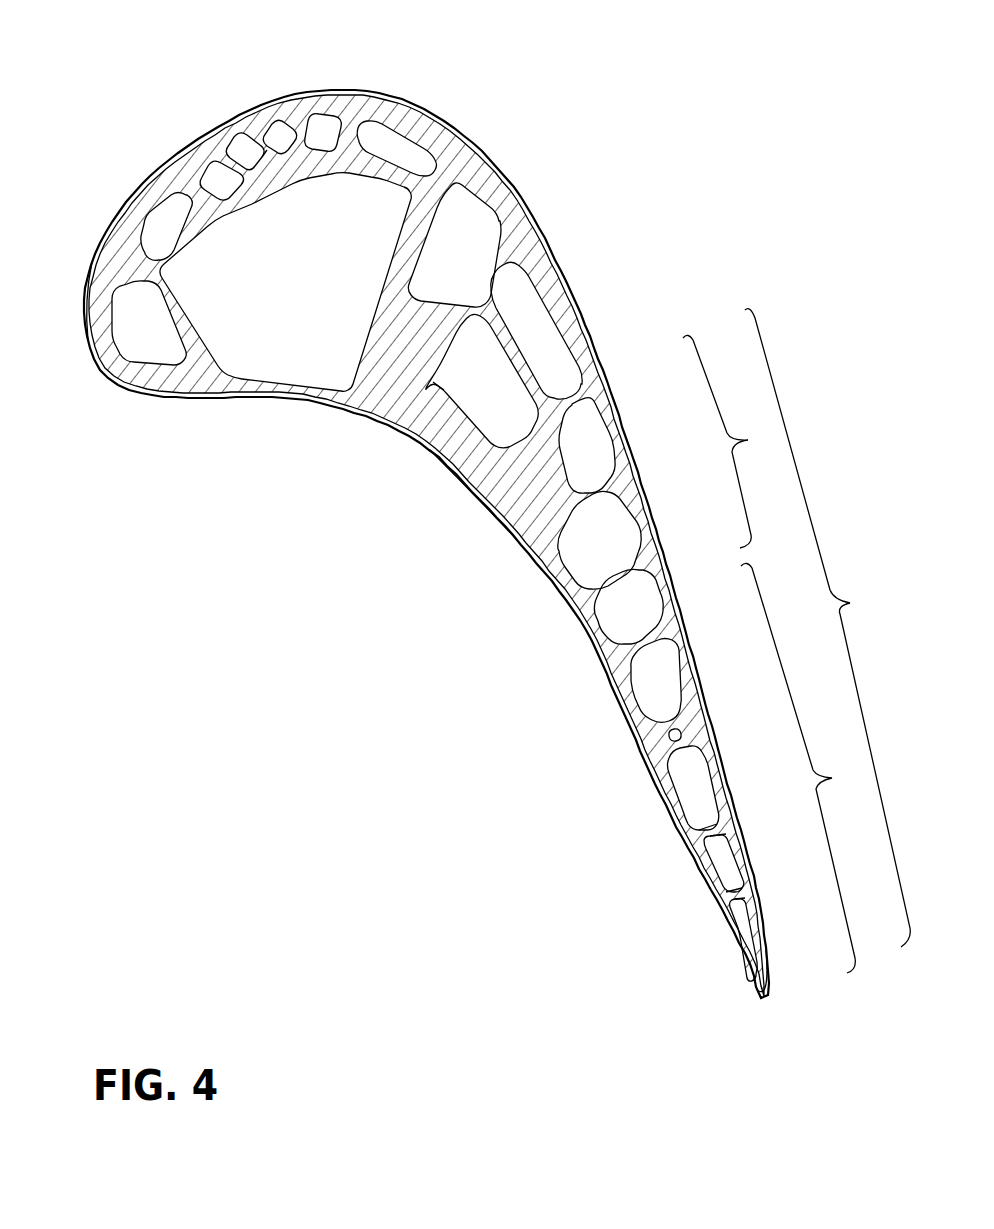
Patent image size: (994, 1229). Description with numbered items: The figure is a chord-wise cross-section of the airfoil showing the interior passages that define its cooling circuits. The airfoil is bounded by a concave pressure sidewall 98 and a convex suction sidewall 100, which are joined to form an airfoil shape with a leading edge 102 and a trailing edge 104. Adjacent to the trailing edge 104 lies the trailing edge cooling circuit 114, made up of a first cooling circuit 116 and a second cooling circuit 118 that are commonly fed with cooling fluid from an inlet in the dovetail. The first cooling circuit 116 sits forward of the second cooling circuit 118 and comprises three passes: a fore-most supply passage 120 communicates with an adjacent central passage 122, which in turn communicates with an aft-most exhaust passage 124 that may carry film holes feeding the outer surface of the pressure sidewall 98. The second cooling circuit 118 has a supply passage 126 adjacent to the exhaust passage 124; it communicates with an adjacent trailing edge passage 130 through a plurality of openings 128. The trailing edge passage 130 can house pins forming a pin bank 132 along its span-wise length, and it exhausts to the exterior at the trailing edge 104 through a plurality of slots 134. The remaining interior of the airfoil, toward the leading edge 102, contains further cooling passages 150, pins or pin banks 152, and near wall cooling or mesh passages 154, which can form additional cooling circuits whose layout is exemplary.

The pressure sidewall 98 is at (512, 546).
The suction sidewall 100 is at (560, 268).
The leading edge 102 is at (86, 300).
The trailing edge 104 is at (764, 1004).
The trailing edge cooling circuit 114 is at (827, 628).
The first cooling circuit 116 is at (732, 441).
The second cooling circuit 118 is at (805, 768).
The supply passage 120 is at (565, 454).
The central passage 122 is at (580, 544).
The exhaust passage 124 is at (621, 606).
The supply passage 126 is at (641, 685).
The openings 128 is at (685, 735).
The trailing edge passage 130 is at (687, 760).
The pin bank 132 is at (727, 815).
The slots 134 is at (748, 897).
The cooling passages 150 is at (133, 334).
The pins or pin banks 152 is at (257, 103).
The near wall cooling or mesh passages 154 is at (252, 178).